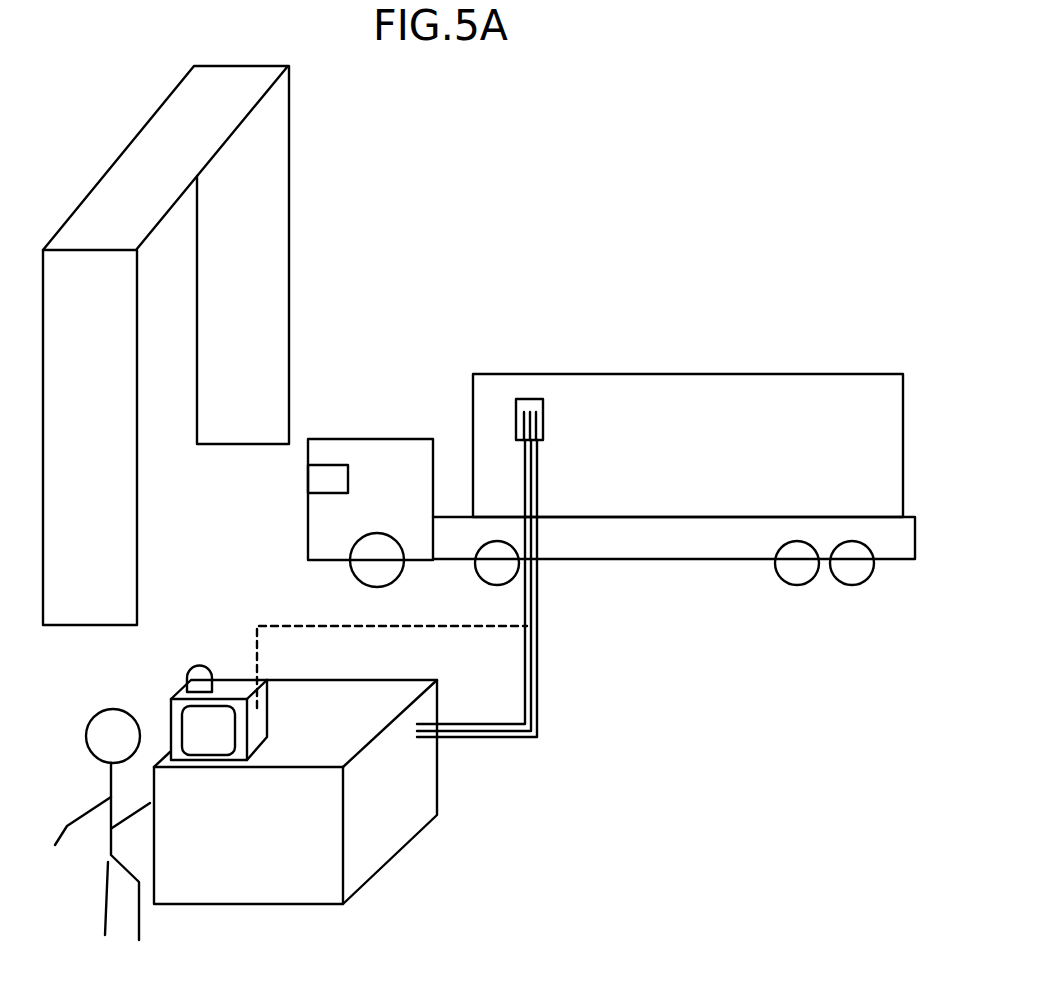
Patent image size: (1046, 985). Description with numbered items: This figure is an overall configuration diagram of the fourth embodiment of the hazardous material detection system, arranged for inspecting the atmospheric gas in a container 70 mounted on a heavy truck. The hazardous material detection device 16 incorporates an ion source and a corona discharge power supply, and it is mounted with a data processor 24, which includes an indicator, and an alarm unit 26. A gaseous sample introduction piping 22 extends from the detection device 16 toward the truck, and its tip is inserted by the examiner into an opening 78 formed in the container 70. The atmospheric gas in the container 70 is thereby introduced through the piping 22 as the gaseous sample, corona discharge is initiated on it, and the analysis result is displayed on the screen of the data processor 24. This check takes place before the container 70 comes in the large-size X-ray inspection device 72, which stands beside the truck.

The hazardous material detection device 16 is at (387, 843).
The gaseous sample introduction piping 22 is at (540, 685).
The data processor 24 is at (263, 727).
The alarm unit 26 is at (198, 665).
The container 70 is at (800, 374).
The large-size X-ray inspection device 72 is at (289, 190).
The opening 78 is at (530, 399).